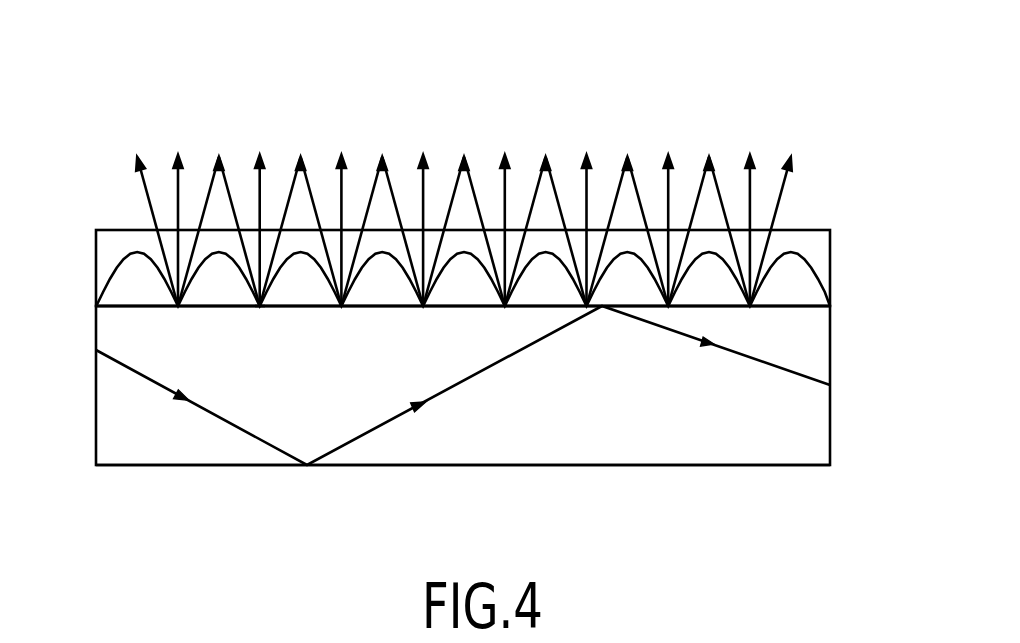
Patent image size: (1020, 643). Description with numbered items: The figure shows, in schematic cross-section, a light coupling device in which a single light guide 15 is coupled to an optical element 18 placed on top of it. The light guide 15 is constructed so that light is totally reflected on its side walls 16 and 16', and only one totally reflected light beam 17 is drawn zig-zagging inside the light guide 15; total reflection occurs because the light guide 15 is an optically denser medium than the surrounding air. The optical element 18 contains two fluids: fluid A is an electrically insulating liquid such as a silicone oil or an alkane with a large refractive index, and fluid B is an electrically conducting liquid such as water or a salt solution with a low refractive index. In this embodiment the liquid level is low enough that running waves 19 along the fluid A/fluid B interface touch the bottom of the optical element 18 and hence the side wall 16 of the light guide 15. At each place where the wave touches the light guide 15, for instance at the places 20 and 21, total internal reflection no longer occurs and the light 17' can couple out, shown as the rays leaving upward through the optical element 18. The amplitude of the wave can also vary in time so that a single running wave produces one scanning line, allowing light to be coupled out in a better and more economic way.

The light guide 15 is at (604, 409).
The side wall 16 is at (515, 353).
The side wall 16' is at (463, 428).
The totally reflected light beam 17 is at (423, 385).
The coupled-out light 17' is at (464, 177).
The optical element 18 is at (793, 230).
The running wave 19 is at (104, 267).
The place 20 is at (261, 309).
The place 21 is at (421, 309).
The fluid A is at (822, 242).
The fluid B is at (797, 288).